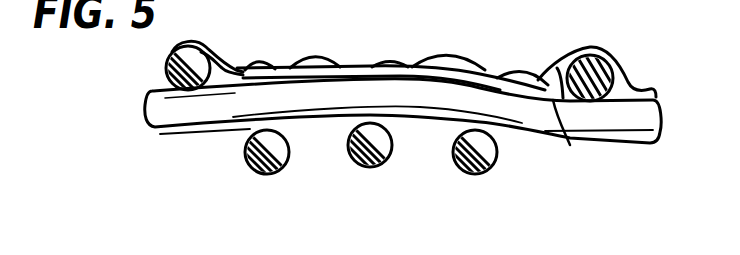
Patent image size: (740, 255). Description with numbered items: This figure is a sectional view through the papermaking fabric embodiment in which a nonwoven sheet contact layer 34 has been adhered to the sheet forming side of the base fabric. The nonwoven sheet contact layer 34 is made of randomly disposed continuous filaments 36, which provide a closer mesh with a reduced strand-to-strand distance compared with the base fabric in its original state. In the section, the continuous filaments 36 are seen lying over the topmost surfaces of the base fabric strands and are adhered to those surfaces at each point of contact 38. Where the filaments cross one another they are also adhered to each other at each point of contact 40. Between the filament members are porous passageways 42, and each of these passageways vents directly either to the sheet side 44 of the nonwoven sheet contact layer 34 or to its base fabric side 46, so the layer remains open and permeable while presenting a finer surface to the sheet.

The nonwoven sheet contact layer 34 is at (617, 76).
The continuous filaments 36 is at (237, 62).
The point of contact with base fabric 38 is at (545, 85).
The point of contact between filaments 40 is at (179, 42).
The porous passageways 42 is at (393, 63).
The sheet side 44 is at (504, 70).
The base fabric side 46 is at (462, 80).